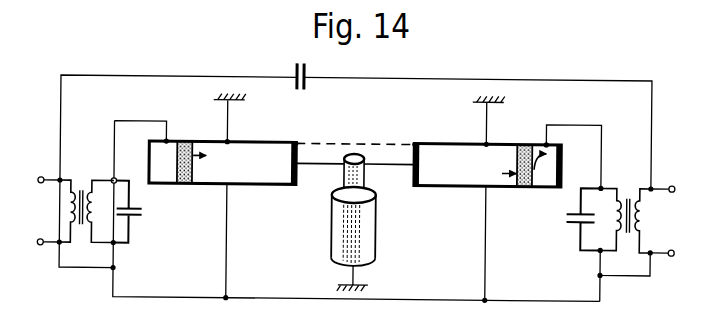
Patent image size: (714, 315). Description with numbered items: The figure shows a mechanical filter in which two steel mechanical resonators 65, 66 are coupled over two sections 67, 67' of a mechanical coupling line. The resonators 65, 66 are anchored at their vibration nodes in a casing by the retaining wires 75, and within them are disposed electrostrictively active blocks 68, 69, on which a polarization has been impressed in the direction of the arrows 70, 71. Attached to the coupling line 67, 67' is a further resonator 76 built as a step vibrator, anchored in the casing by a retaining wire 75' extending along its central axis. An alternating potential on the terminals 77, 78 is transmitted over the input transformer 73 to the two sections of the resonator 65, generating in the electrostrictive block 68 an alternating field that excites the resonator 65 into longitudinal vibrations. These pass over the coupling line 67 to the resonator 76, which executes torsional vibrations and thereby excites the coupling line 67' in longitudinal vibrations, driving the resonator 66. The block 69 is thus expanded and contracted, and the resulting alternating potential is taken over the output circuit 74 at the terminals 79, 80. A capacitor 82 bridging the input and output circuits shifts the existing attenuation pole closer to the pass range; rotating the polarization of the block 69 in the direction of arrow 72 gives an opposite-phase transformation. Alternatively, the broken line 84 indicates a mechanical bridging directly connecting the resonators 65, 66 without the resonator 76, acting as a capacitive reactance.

The mechanical resonator 65 is at (247, 175).
The mechanical resonator 66 is at (441, 175).
The coupling line section 67 is at (320, 182).
The coupling line section 67' is at (389, 183).
The electrostrictively active block 68 is at (194, 184).
The electrostrictively active block 69 is at (527, 184).
The polarization direction arrow 70 is at (210, 155).
The polarization direction arrow 71 is at (562, 155).
The rotated polarization direction arrow 72 is at (499, 173).
The input transformer 73 is at (81, 186).
The output circuit 74 is at (628, 192).
The retaining wire 75 is at (358, 119).
The retaining wire 75' is at (368, 276).
The step-vibrator resonator 76 is at (372, 237).
The input terminal 77 is at (43, 168).
The input terminal 78 is at (42, 230).
The output terminal 79 is at (668, 178).
The output terminal 80 is at (670, 241).
The capacitor 82 is at (311, 84).
The mechanical bridging coupling line 84 is at (352, 132).